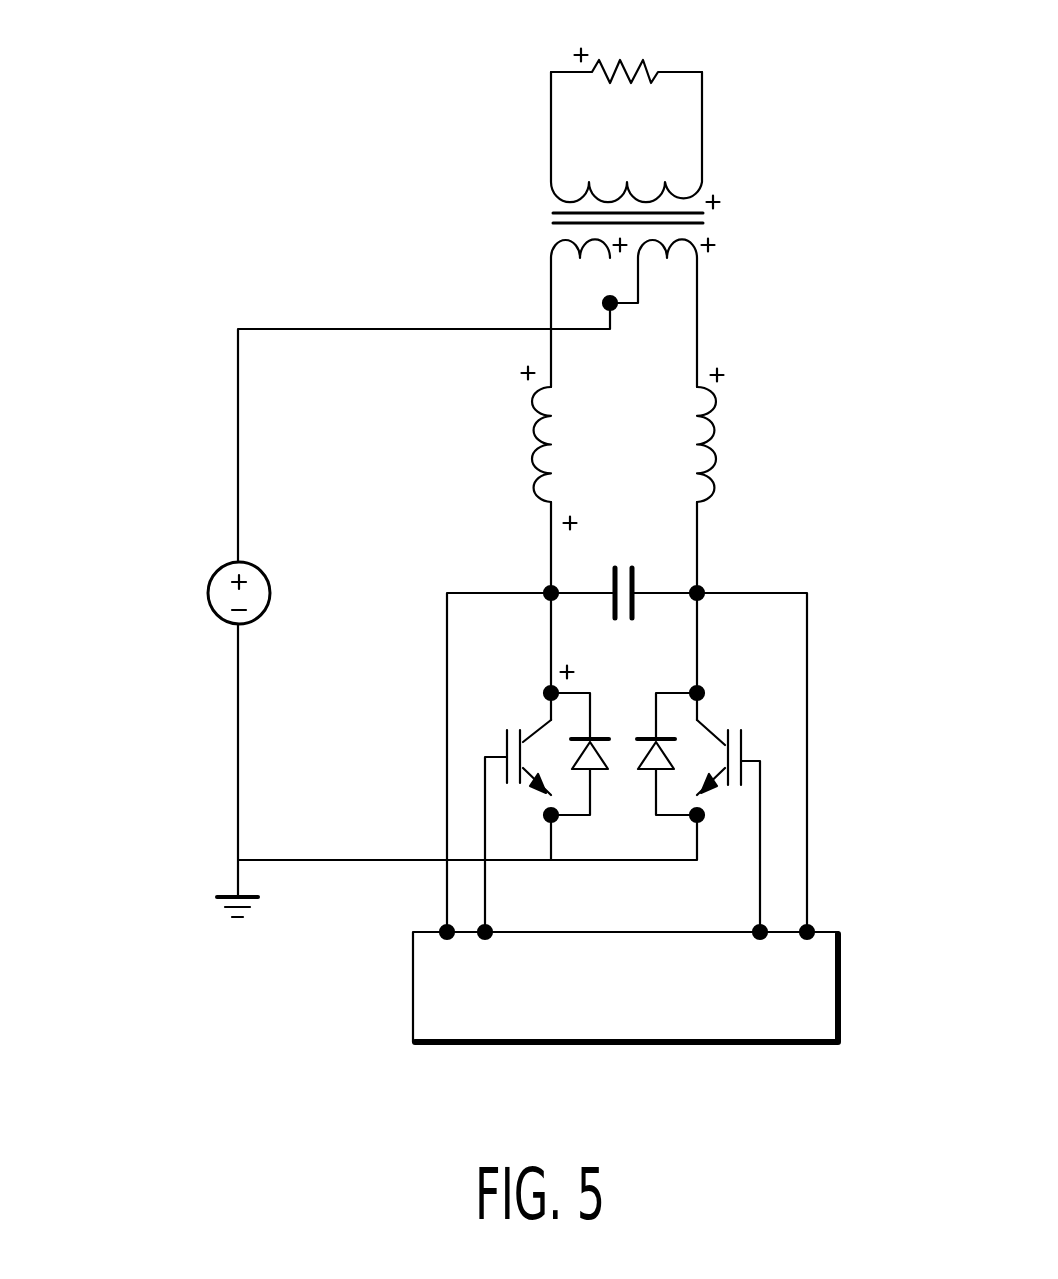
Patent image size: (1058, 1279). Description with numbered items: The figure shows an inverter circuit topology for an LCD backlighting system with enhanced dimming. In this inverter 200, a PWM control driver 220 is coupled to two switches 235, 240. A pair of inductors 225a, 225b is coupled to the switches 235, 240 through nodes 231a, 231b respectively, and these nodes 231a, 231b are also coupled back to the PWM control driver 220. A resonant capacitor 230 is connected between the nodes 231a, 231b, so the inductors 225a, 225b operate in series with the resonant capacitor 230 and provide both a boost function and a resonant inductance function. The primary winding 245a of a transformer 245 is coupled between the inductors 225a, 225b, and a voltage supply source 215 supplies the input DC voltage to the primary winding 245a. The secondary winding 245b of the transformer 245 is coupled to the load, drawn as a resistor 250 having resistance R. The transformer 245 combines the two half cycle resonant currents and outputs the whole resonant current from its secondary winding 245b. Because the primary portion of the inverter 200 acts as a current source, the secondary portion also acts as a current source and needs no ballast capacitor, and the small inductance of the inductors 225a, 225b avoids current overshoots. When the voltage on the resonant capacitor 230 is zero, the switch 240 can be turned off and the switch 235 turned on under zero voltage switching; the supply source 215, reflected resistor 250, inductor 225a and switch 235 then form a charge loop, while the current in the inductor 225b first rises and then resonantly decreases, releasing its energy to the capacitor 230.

The inverter 200 is at (138, 895).
The voltage supply source 215 is at (210, 577).
The PWM control driver 220 is at (843, 987).
The inductor 225a is at (535, 407).
The inductor 225b is at (713, 392).
The resonant capacitor 230 is at (643, 577).
The node 231a is at (549, 590).
The node 231b is at (699, 590).
The switch 235 is at (537, 790).
The switch 240 is at (710, 790).
The transformer 245 is at (782, 229).
The primary winding 245a is at (698, 258).
The secondary winding 245b is at (703, 182).
The resistor 250 is at (646, 63).